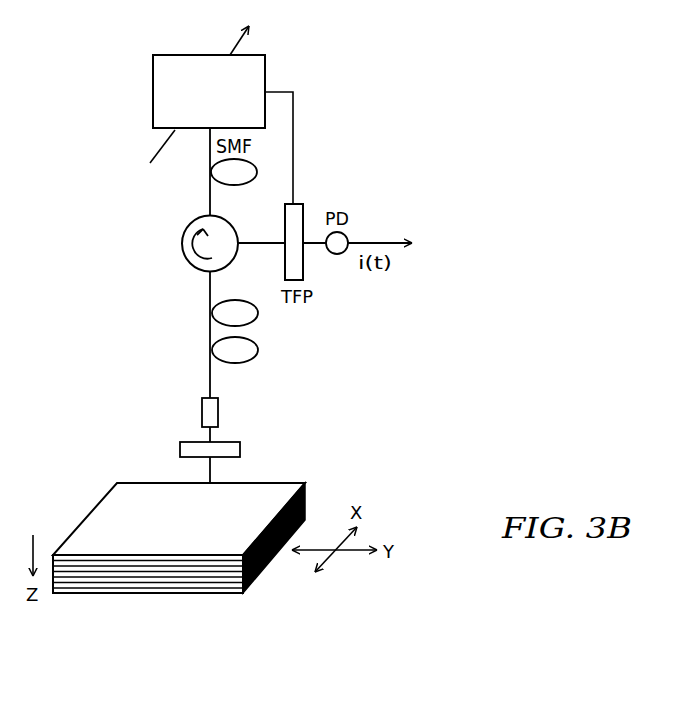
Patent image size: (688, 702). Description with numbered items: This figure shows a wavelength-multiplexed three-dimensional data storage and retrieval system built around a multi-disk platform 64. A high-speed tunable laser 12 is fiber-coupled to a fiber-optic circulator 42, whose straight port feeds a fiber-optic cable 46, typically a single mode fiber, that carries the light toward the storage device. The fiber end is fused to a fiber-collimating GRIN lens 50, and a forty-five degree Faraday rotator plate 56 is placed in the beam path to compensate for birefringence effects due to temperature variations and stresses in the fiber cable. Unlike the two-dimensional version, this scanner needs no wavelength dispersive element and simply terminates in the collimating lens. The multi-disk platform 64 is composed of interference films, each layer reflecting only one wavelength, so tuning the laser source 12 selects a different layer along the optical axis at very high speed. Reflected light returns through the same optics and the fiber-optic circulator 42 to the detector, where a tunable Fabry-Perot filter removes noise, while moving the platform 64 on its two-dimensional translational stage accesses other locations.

The tunable laser 12 is at (266, 57).
The fiber-optic circulator 42 is at (187, 260).
The fiber-optic cable 46 is at (210, 335).
The fiber-collimating lens 50 is at (218, 415).
The Faraday rotator plate 56 is at (240, 448).
The multi-disk platform 64 is at (153, 483).